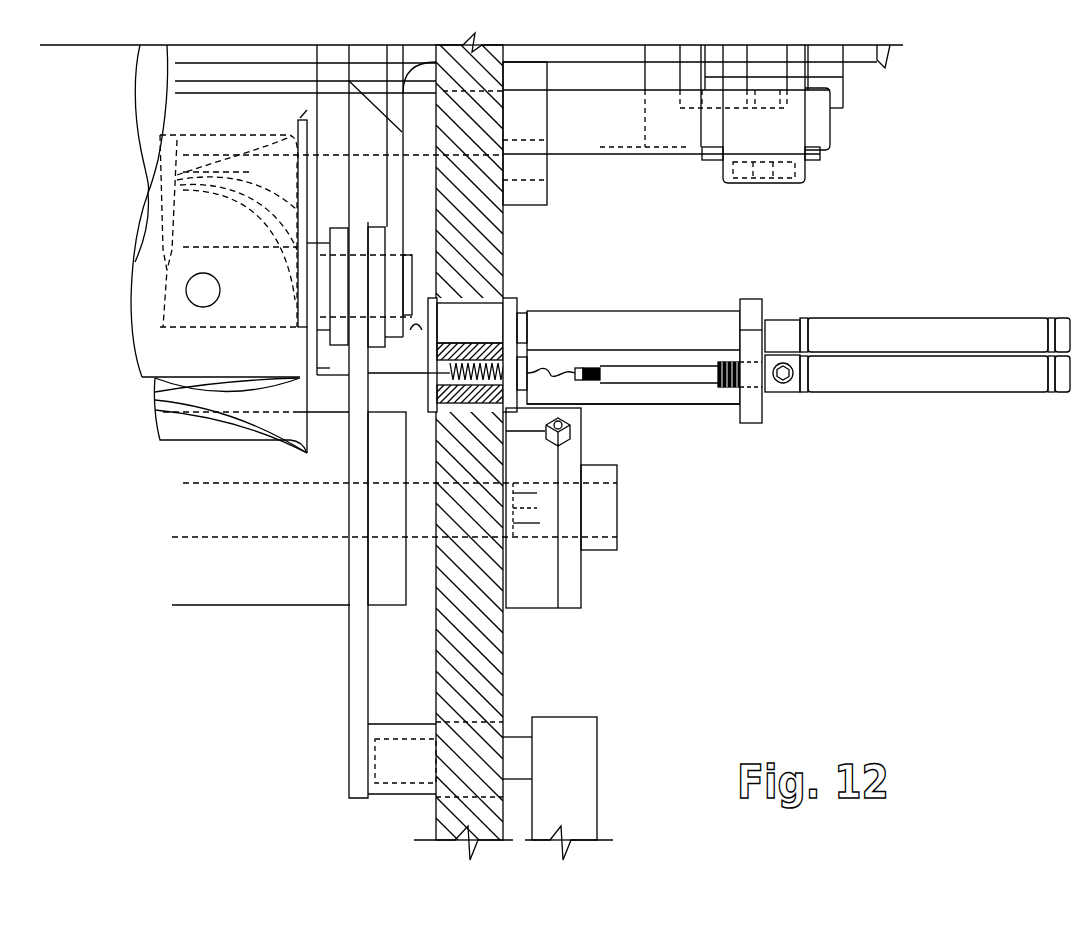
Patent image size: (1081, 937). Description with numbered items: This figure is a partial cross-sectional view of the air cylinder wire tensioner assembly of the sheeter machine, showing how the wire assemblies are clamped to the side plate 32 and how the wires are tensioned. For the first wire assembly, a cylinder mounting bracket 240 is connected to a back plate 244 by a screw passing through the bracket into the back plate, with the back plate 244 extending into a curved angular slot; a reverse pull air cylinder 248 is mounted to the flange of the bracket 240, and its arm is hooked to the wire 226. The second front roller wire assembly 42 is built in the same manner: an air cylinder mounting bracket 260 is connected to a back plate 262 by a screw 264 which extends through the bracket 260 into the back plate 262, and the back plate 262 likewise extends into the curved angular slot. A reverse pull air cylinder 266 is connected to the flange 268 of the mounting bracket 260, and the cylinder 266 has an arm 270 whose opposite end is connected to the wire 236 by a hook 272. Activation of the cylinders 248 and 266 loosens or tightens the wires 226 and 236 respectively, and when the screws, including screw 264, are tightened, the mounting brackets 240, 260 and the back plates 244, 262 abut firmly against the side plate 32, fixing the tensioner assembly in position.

The side plate 32 is at (497, 660).
The front roller wire assembly 42 is at (800, 299).
The wire 226 is at (432, 374).
The wire 236 is at (416, 382).
The cylinder mounting bracket 240 is at (653, 313).
The back plate 244 is at (484, 336).
The reverse pull air cylinder 248 is at (878, 323).
The air cylinder mounting bracket 260 is at (710, 395).
The back plate 262 is at (561, 508).
The screw 264 is at (528, 347).
The reverse pull air cylinder 266 is at (893, 382).
The flange 268 is at (752, 413).
The arm 270 is at (665, 374).
The hook 272 is at (583, 378).